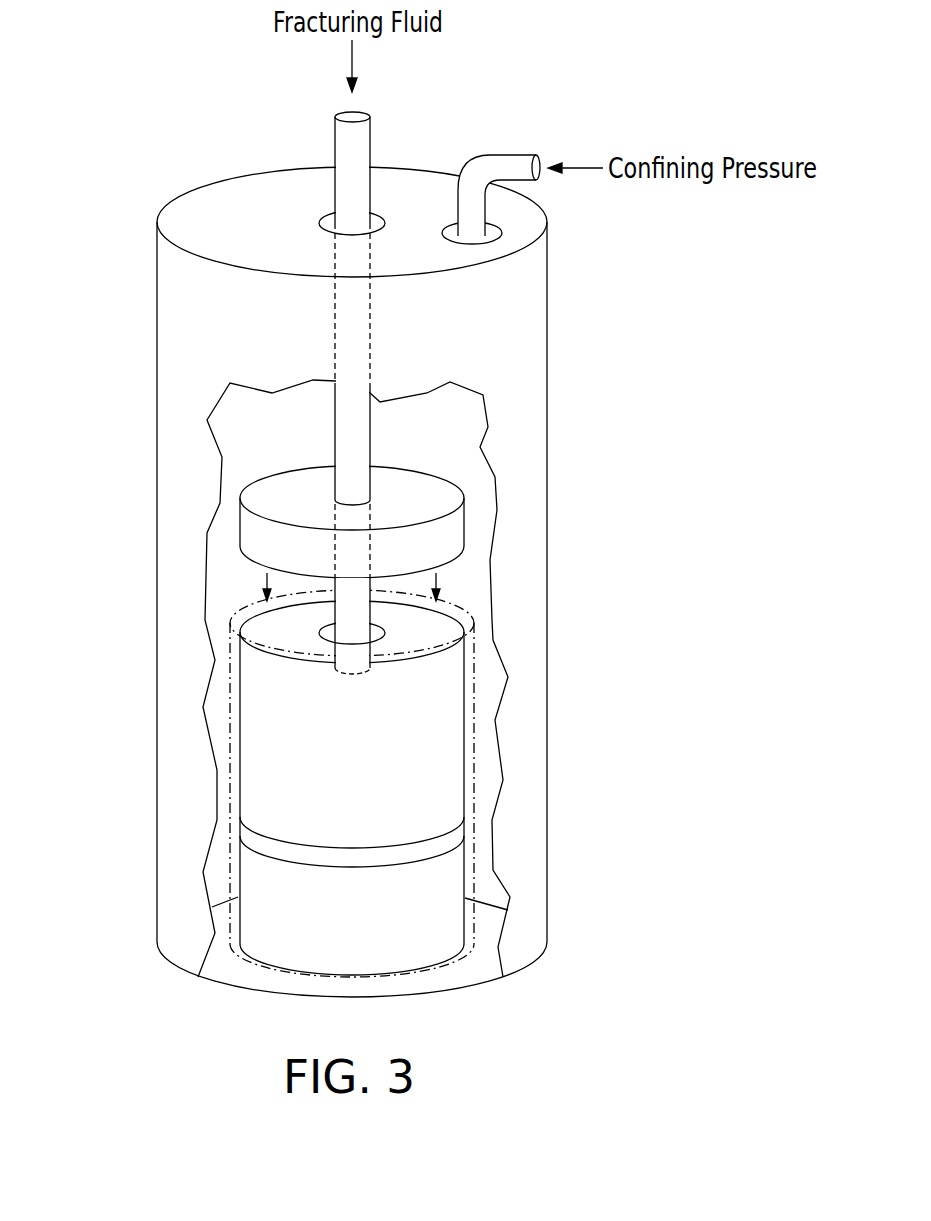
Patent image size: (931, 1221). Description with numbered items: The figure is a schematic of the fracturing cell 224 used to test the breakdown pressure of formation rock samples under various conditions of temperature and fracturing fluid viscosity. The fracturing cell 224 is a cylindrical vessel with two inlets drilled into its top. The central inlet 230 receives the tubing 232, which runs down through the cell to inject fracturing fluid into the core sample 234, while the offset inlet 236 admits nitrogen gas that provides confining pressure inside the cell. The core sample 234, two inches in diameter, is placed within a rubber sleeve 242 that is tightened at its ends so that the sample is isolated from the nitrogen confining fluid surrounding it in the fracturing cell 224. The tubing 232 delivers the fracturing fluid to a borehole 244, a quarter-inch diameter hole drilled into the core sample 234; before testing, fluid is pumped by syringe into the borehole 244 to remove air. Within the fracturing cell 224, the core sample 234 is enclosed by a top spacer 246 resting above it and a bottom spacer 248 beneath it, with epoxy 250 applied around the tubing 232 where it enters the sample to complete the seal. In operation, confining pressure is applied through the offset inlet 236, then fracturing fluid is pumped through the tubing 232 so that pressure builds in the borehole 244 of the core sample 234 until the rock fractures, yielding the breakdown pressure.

The fracturing cell 224 is at (173, 501).
The central inlet 230 is at (327, 215).
The tubing 232 is at (333, 410).
The core sample 234 is at (258, 783).
The offset inlet 236 is at (490, 226).
The rubber sleeve 242 is at (475, 718).
The borehole 244 is at (350, 677).
The top spacer 246 is at (465, 522).
The bottom spacer 248 is at (468, 877).
The epoxy 250 is at (387, 633).